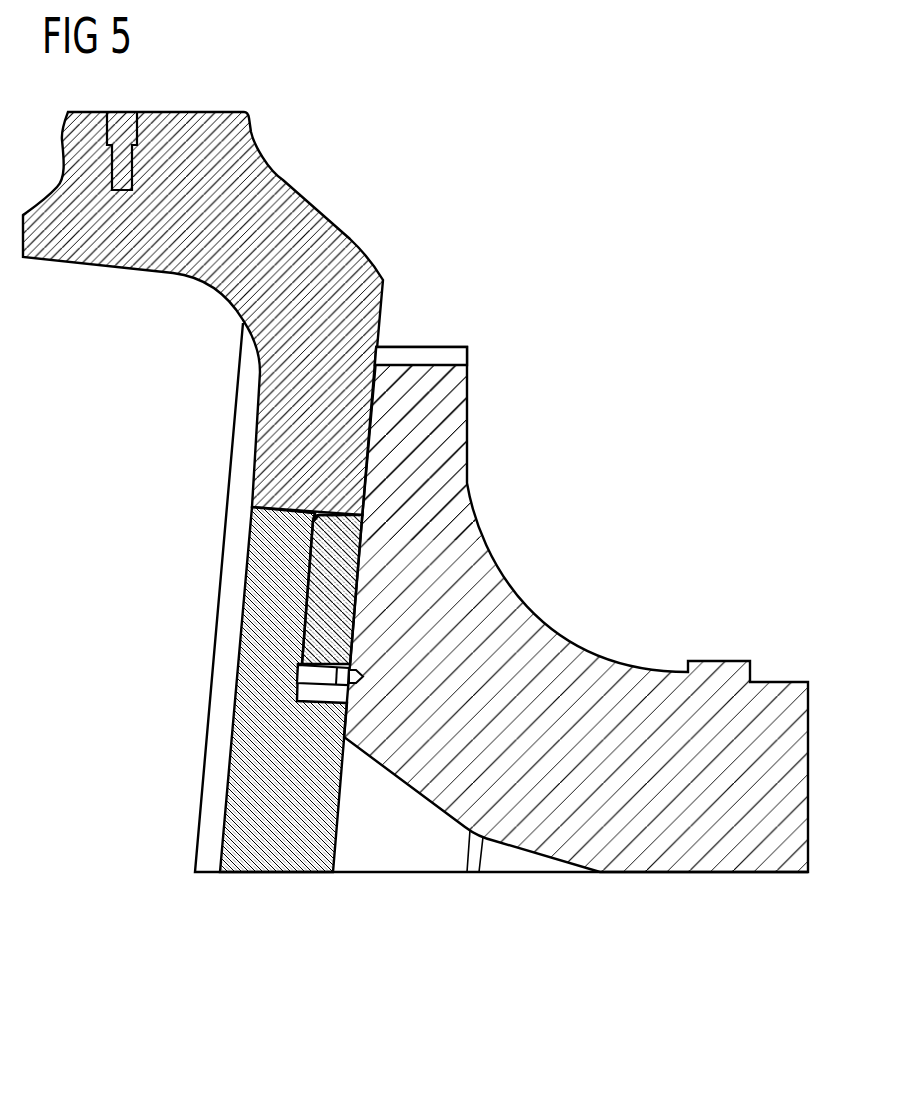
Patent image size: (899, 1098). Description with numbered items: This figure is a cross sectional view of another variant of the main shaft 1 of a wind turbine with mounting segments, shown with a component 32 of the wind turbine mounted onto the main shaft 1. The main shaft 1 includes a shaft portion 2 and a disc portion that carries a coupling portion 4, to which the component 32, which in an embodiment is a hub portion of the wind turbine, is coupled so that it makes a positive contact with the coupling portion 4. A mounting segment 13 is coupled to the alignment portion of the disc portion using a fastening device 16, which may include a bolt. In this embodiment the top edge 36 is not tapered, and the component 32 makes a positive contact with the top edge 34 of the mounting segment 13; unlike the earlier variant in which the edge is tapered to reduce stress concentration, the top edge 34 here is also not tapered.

The main shaft 1 is at (688, 928).
The shaft portion 2 is at (782, 682).
The coupling portion 4 is at (373, 423).
The mounting segment 13 is at (325, 597).
The fastening device 16 is at (302, 689).
The component of the wind turbine 32 is at (335, 397).
The top edge 34 is at (305, 512).
The top edge 36 is at (267, 523).